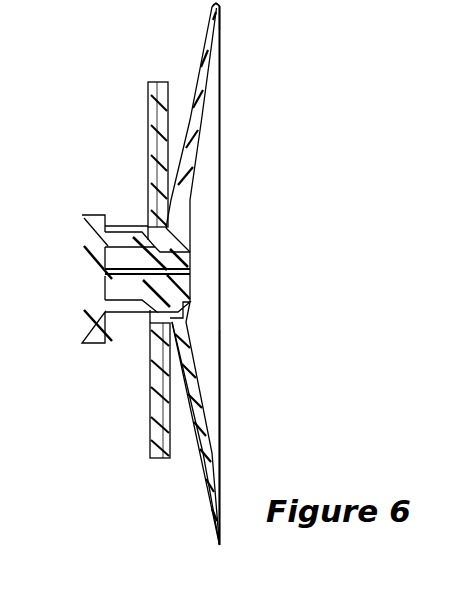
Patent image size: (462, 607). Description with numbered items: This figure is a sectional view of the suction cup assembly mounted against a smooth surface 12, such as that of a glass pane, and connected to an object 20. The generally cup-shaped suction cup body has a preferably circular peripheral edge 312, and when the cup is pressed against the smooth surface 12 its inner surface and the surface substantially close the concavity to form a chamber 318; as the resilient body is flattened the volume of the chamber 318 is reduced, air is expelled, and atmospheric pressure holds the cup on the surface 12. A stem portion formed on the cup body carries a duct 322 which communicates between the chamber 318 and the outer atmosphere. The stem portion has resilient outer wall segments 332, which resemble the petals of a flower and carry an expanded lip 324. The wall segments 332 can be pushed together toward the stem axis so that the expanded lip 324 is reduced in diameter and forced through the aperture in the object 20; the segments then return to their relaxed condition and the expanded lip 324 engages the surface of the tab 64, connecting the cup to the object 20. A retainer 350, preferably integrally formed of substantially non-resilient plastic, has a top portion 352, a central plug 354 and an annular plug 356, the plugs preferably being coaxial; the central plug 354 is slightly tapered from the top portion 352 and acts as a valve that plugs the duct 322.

The surface 12 is at (214, 134).
The object 20 is at (169, 89).
The tab 64 is at (148, 96).
The peripheral edge 312 is at (219, 6).
The chamber 318 is at (214, 348).
The duct 322 is at (185, 255).
The expanded lip 324 is at (143, 226).
The outer wall segments 332 is at (118, 226).
The retainer 350 is at (81, 321).
The top portion 352 is at (87, 262).
The central plug 354 is at (126, 271).
The annular plug 356 is at (135, 315).